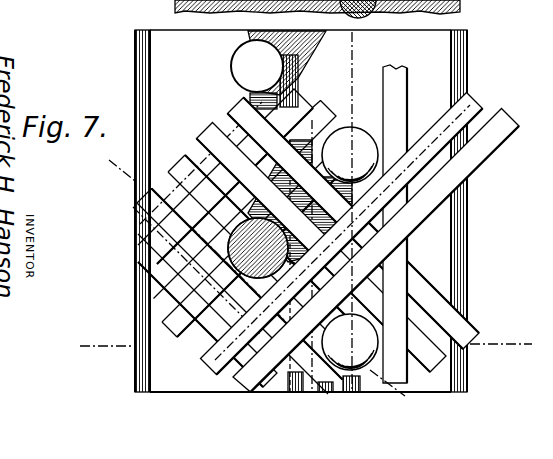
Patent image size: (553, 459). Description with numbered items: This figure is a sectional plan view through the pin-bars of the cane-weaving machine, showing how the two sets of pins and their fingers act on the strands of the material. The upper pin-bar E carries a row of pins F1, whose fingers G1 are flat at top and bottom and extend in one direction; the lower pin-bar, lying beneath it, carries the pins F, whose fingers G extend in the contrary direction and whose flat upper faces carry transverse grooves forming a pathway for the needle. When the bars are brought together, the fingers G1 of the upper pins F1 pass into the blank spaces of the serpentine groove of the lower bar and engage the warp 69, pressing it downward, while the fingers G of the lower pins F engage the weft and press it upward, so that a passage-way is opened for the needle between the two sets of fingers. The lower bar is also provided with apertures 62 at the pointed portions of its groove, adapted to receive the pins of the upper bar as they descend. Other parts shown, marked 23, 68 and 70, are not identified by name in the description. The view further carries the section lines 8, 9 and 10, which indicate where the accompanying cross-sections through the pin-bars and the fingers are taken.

The apertures 62 is at (249, 63).
The warp 69 is at (209, 135).
The guide bar 23 is at (197, 193).
The support bar 70 is at (421, 103).
The diagonal guide bars 68 is at (360, 243).
The fingers G is at (318, 105).
The fingers G1 is at (267, 241).
The pins F is at (353, 147).
The pins F1 is at (221, 302).
The upper pin-bar E is at (470, 236).
The section line 8 8 is at (397, 48).
The section line 9 9 is at (515, 359).
The section line 10 10 is at (101, 200).